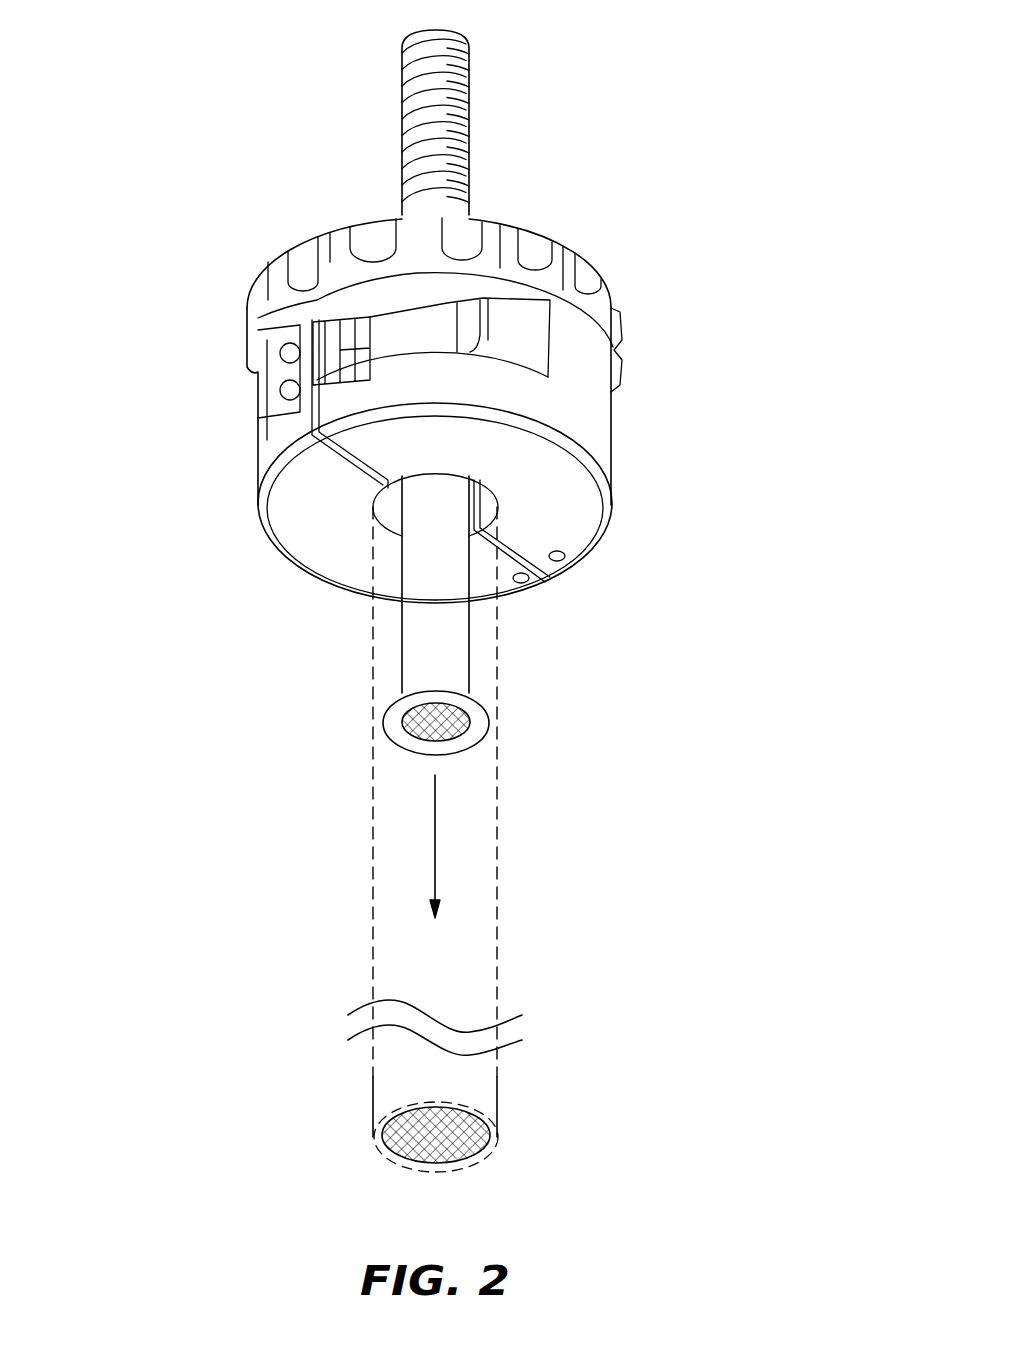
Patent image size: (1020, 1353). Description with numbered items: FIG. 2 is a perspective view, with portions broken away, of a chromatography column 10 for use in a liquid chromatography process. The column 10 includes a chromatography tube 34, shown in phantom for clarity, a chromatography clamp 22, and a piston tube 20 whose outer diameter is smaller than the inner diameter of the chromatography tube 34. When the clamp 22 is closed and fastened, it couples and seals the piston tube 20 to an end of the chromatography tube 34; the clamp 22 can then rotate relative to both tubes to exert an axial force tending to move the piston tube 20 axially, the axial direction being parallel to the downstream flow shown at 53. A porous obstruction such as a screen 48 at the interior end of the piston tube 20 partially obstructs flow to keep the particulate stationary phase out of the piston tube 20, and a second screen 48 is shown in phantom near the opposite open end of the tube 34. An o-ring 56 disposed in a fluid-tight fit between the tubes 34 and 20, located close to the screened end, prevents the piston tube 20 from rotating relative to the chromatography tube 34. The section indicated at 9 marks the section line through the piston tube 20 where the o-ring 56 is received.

The chromatography column 10 is at (634, 72).
The piston tube 20 is at (405, 128).
The chromatography clamp 22 is at (627, 432).
The chromatography tube 34 is at (380, 805).
The screen 48 is at (440, 735).
The axial direction 53 is at (454, 857).
The o-ring 56 is at (478, 716).
The section line 9- 9 is at (207, 378).